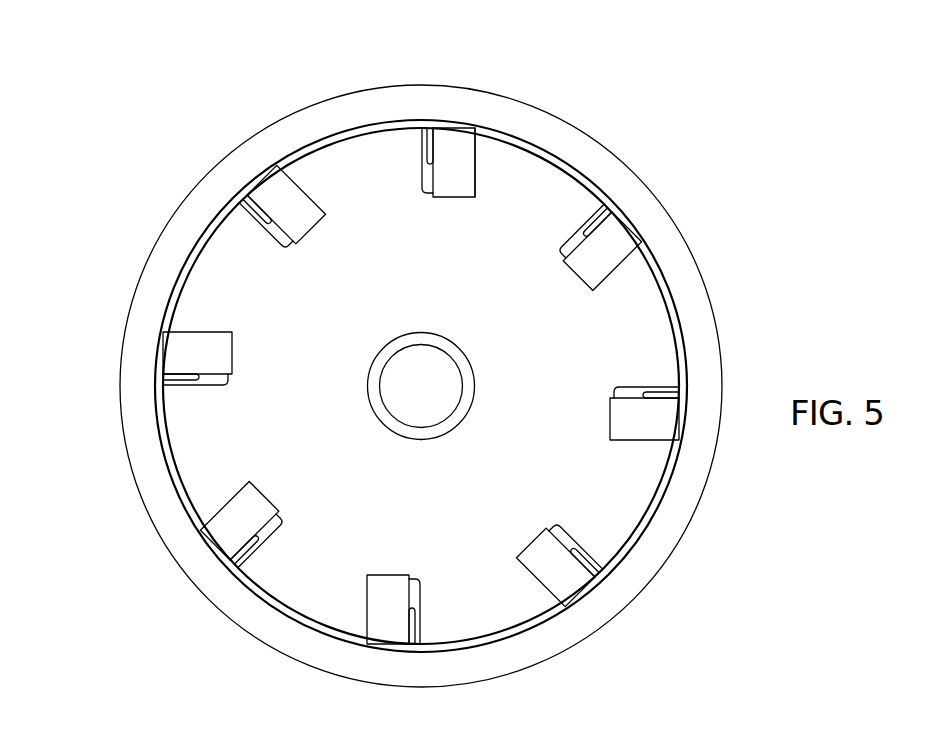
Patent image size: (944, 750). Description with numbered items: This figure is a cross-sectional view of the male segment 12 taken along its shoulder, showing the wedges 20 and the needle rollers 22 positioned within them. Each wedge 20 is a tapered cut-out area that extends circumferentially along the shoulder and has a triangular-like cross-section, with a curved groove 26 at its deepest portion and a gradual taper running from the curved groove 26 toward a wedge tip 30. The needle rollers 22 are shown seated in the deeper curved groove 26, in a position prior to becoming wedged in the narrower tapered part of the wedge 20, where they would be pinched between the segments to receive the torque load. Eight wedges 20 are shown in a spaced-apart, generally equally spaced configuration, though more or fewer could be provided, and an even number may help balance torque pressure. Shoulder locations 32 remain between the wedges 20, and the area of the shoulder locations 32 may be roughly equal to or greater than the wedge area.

The male segment 12 is at (168, 138).
The wedge 20 is at (421, 331).
The needle roller 22 is at (436, 147).
The curved groove 26 is at (423, 157).
The wedge tip 30 is at (476, 157).
The shoulder location 32 is at (162, 448).